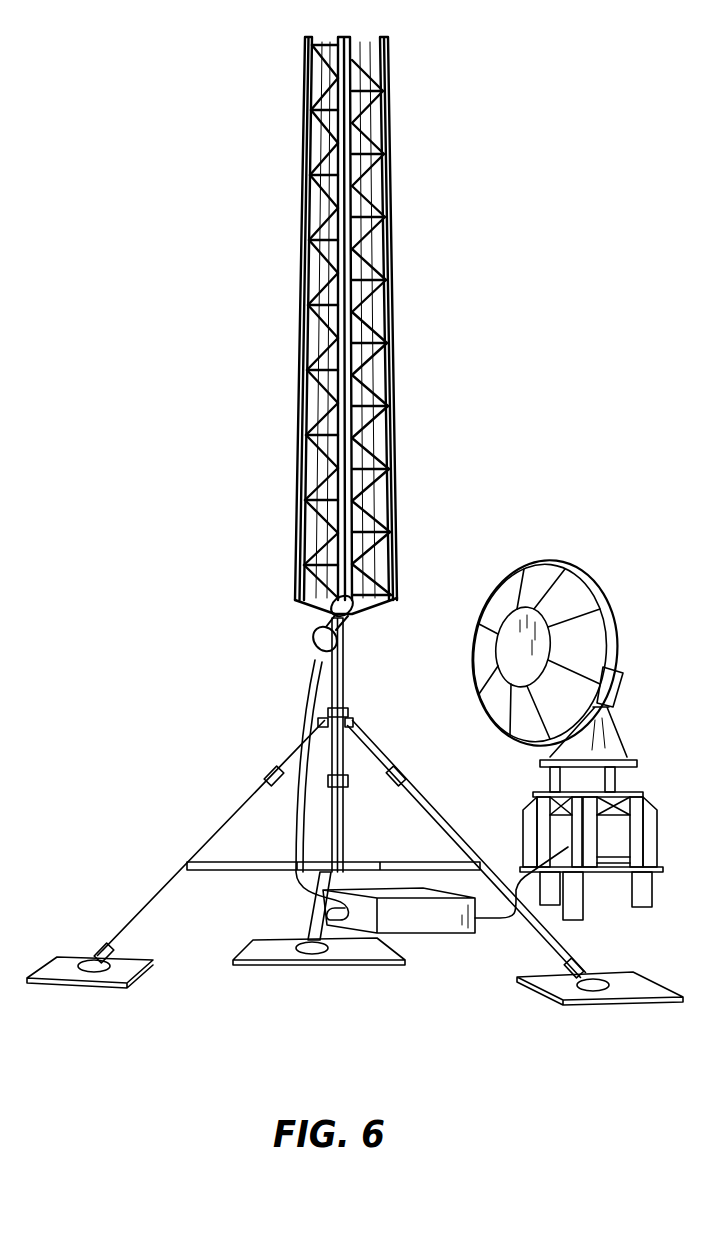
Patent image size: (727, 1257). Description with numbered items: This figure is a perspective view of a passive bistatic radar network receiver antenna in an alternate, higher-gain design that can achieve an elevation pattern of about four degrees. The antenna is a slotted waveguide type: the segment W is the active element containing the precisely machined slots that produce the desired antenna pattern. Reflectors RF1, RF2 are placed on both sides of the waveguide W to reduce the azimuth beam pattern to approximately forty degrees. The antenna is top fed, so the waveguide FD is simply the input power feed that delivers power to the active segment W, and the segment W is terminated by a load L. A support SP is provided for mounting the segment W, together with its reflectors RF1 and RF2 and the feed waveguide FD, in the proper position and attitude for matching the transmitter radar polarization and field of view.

The reflector RF1 is at (304, 65).
The reflector RF2 is at (387, 287).
The waveguide segment W is at (343, 502).
The load L is at (357, 627).
The waveguide feed FD is at (300, 697).
The support SP is at (345, 690).